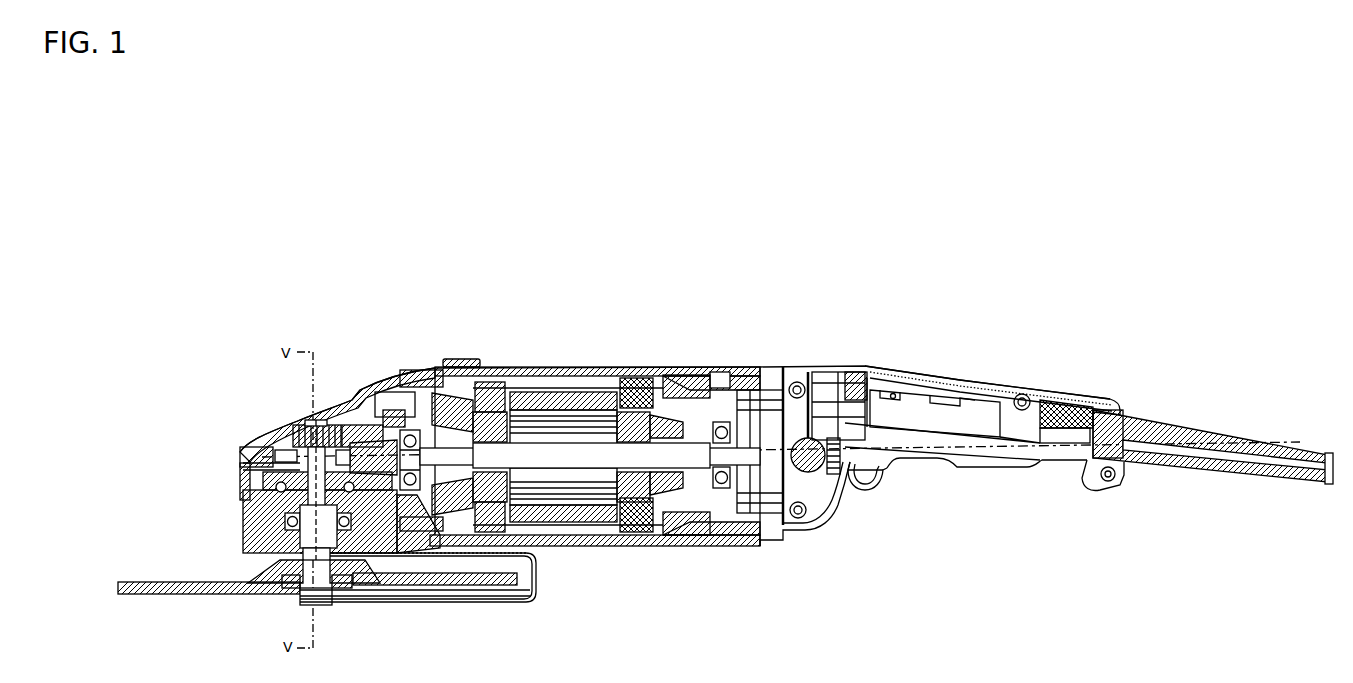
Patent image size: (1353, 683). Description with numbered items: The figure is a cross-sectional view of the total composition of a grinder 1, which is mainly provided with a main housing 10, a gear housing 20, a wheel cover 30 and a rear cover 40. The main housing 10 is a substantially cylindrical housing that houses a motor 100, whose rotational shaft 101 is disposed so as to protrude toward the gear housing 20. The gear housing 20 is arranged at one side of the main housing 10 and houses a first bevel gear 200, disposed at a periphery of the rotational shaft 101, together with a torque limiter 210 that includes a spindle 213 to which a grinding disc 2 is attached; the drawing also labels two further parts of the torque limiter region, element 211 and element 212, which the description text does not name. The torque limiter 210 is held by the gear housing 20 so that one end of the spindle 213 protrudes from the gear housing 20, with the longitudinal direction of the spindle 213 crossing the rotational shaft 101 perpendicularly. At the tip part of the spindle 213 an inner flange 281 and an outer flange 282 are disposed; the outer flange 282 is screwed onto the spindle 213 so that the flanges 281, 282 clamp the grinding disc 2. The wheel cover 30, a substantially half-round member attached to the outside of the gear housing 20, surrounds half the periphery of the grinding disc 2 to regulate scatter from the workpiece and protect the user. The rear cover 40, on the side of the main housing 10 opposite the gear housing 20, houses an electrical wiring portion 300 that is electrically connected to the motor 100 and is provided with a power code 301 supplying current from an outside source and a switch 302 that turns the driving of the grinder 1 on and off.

The grinder 1 is at (659, 322).
The main housing 10 is at (697, 358).
The gear housing 20 is at (284, 433).
The first bevel gear 200 is at (372, 440).
The torque limiter 210 is at (260, 443).
The bevel gear 211 is at (243, 493).
The spindle lock pin 212 is at (273, 467).
The spindle 213 is at (303, 540).
The grinding disc 2 is at (145, 592).
The inner flange 281 is at (262, 580).
The outer flange 282 is at (300, 590).
The wheel cover 30 is at (537, 587).
The motor 100 is at (560, 418).
The rotational shaft 101 is at (522, 392).
The rear cover 40 is at (963, 376).
The electrical wiring portion 300 is at (1074, 385).
The power code 301 is at (1167, 422).
The switch 302 is at (927, 467).